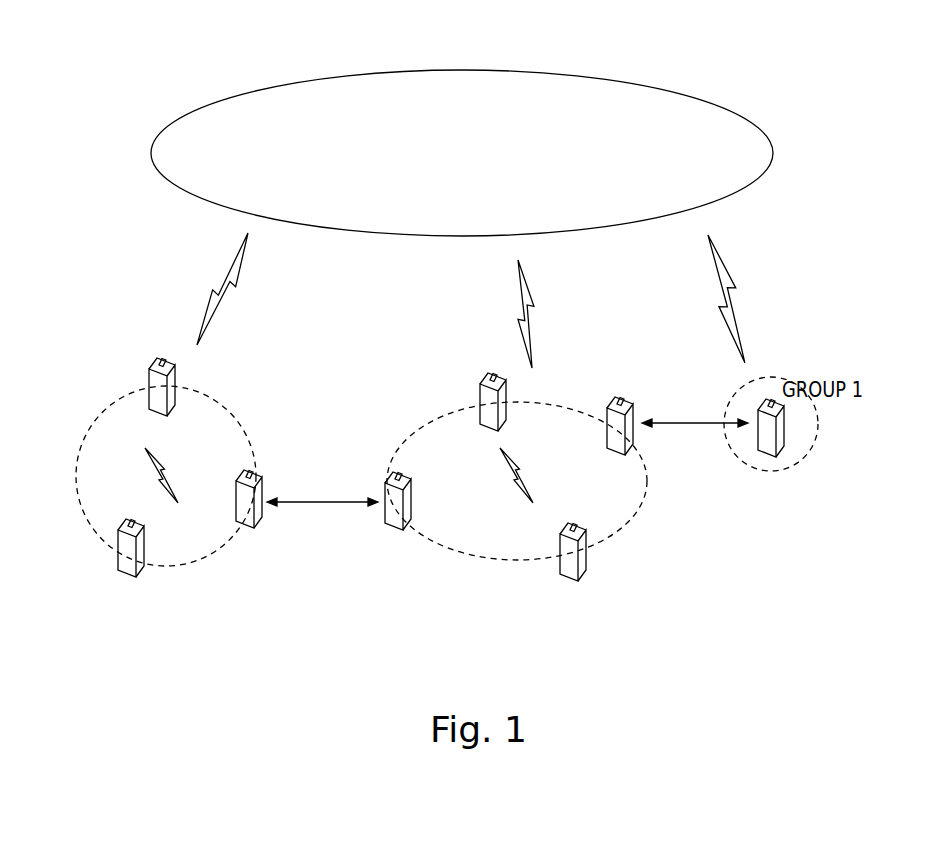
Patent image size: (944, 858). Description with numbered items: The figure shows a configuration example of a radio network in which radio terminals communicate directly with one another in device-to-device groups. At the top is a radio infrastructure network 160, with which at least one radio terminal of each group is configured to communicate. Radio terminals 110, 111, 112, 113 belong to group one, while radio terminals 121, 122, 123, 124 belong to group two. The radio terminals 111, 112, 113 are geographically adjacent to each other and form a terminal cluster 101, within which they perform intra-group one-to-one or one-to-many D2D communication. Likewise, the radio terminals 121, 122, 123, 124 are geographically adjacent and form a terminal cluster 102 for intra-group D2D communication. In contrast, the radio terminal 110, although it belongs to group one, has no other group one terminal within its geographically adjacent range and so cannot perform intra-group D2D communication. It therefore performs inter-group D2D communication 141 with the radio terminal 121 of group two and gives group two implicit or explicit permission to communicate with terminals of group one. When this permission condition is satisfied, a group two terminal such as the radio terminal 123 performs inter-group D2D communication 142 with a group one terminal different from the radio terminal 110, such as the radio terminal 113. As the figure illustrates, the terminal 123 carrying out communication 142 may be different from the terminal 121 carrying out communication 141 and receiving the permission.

The radio infrastructure network 160 is at (592, 80).
The terminal cluster 101 is at (197, 558).
The terminal cluster 102 is at (507, 562).
The radio terminal 110 is at (793, 452).
The radio terminal 111 is at (146, 378).
The radio terminal 112 is at (127, 570).
The radio terminal 113 is at (235, 482).
The radio terminal 121 is at (610, 396).
The radio terminal 122 is at (478, 398).
The radio terminal 123 is at (413, 500).
The radio terminal 124 is at (585, 560).
The inter-group D2D communication 141 is at (690, 427).
The inter-group D2D communication 142 is at (323, 505).